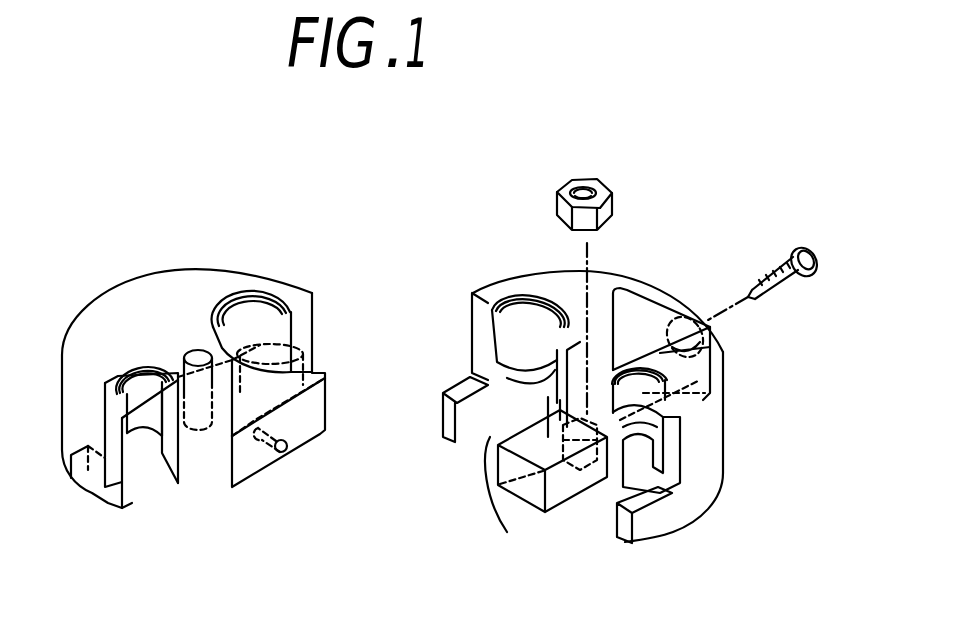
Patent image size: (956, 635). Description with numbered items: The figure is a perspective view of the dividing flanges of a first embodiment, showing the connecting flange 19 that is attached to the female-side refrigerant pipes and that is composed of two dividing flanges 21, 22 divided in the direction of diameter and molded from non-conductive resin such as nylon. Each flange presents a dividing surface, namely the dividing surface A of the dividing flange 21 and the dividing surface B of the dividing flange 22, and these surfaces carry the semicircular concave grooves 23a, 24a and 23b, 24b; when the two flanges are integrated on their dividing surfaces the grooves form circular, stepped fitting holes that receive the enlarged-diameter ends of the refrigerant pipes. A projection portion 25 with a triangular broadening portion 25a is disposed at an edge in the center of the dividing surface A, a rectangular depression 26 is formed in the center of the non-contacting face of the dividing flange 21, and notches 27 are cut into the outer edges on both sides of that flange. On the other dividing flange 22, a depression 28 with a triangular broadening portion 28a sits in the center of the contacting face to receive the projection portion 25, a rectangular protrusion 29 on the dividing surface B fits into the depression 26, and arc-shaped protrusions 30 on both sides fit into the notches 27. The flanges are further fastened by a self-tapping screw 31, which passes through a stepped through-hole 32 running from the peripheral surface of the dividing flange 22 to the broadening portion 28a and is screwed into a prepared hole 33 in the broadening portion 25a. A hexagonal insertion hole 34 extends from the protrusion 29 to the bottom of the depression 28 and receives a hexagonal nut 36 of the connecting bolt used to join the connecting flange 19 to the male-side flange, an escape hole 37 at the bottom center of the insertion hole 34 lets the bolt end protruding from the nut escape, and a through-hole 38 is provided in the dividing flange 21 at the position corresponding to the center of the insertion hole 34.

The connecting flange 19 is at (741, 496).
The dividing flange 21 is at (181, 268).
The dividing flange 22 is at (641, 318).
The semicircular concave groove 23a is at (148, 473).
The semicircular concave groove 23b is at (630, 470).
The semicircular concave groove 24a is at (258, 322).
The semicircular concave groove 24b is at (520, 325).
The projection portion 25 is at (240, 358).
The triangular broadening portion 25a is at (324, 380).
The rectangular depression 26 is at (180, 462).
The notch 27 is at (306, 378).
The depression 28 is at (613, 290).
The triangular broadening portion 28a is at (648, 302).
The rectangular protrusion 29 is at (524, 497).
The arc-shaped protrusion 30 is at (447, 422).
The self-tapping screw 31 is at (800, 245).
The stepped through-hole 32 is at (712, 362).
The prepared hole 33 is at (287, 448).
The hexagonal insertion hole 34 is at (508, 414).
The hexagonal nut 36 is at (613, 193).
The escape hole 37 is at (565, 505).
The through-hole 38 is at (191, 349).
The dividing surface A is at (313, 308).
The dividing surface B is at (482, 337).